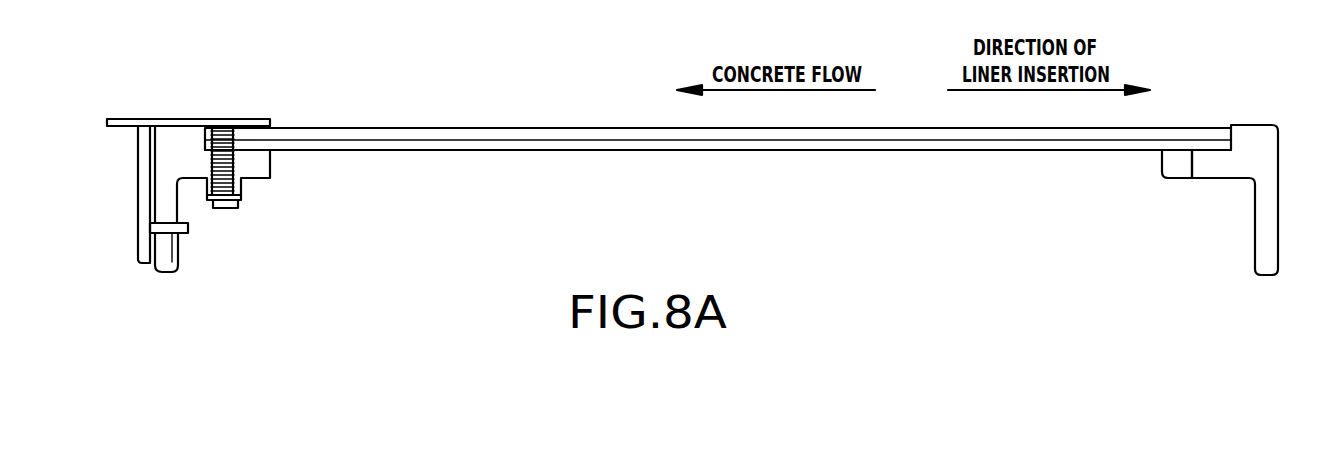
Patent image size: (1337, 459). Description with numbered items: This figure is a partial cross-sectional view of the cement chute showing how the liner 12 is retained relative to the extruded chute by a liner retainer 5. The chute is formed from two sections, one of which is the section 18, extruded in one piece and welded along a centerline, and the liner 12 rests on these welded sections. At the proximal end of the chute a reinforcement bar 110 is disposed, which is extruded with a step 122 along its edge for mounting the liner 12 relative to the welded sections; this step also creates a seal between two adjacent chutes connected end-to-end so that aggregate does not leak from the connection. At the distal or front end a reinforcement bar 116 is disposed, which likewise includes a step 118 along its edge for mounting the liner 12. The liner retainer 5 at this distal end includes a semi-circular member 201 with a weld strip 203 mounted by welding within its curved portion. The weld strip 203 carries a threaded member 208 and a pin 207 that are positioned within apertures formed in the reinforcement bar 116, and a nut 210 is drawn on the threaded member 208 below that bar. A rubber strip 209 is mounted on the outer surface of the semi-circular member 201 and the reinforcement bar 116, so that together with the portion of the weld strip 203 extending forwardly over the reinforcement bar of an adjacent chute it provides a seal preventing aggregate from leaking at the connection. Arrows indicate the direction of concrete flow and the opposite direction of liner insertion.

The liner retainer 5 is at (128, 105).
The liner 12 is at (718, 142).
The section 18 is at (662, 152).
The reinforcement bar 110 is at (1255, 125).
The reinforcement bar 116 is at (183, 162).
The step 118 is at (253, 152).
The step 122 is at (1183, 151).
The semi-circular member 201 is at (158, 150).
The weld strip 203 is at (143, 118).
The pin 207 is at (172, 270).
The threaded member 208 is at (241, 179).
The rubber strip 209 is at (137, 168).
The nut 210 is at (243, 194).